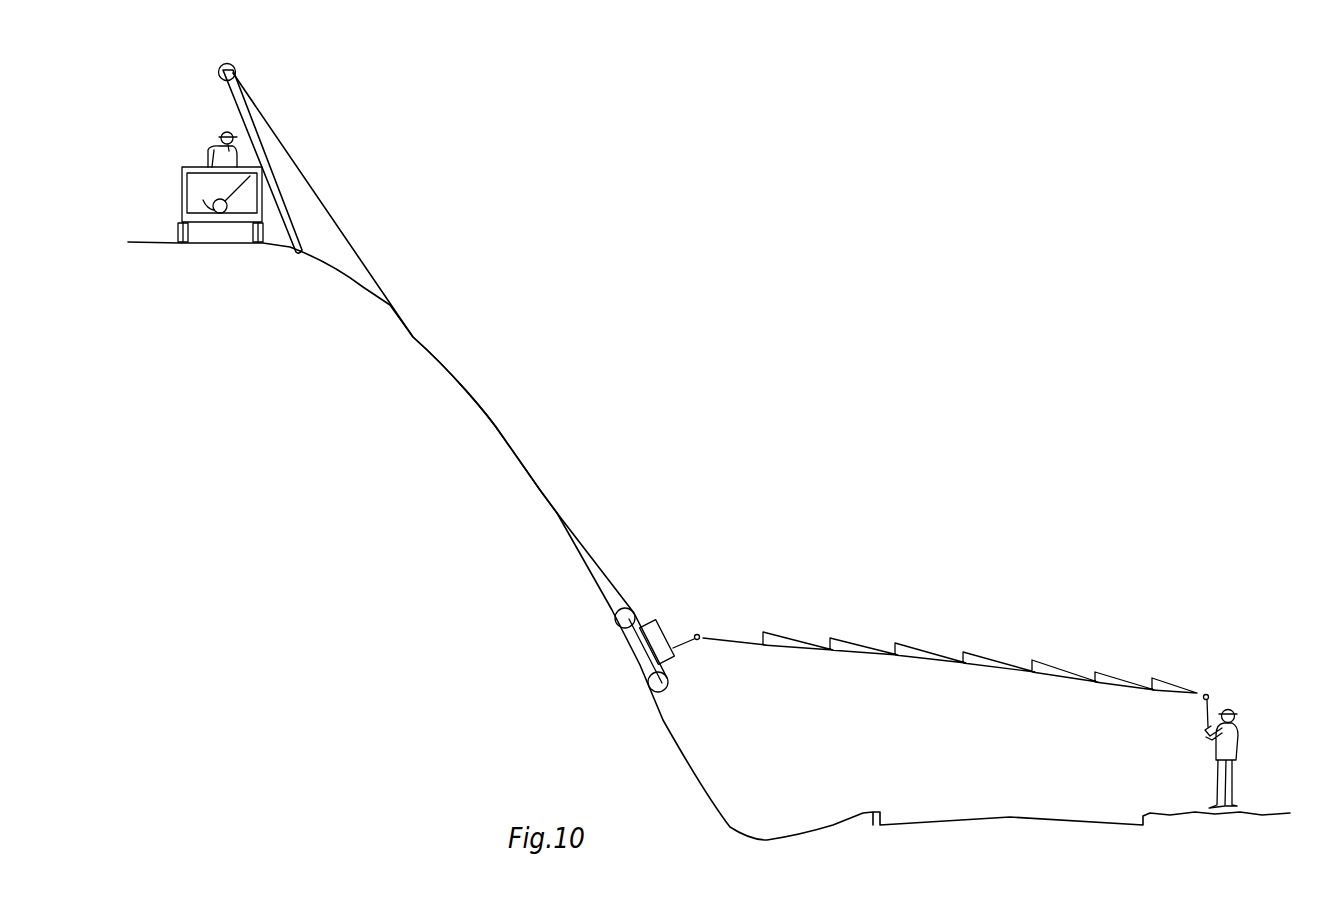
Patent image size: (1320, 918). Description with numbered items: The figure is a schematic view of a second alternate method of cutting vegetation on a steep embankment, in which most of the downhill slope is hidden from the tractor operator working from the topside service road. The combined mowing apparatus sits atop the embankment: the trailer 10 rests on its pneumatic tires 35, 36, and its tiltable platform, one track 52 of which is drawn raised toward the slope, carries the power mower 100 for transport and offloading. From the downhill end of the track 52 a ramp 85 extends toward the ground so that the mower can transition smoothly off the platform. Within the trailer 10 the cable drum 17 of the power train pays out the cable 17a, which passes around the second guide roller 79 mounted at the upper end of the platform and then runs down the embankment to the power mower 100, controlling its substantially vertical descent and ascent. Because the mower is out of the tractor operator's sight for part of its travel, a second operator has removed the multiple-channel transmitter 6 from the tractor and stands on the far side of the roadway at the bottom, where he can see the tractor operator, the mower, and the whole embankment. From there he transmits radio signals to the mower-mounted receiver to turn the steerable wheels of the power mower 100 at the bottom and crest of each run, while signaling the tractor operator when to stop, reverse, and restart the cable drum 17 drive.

The multiple-channel transmitter 6 is at (1203, 730).
The trailer 10 is at (172, 195).
The cable drum 17 is at (222, 194).
The cable 17a is at (350, 250).
The pneumatic tire 35 is at (190, 244).
The pneumatic tire 36 is at (263, 245).
The track 52 is at (257, 141).
The second guide roller 79 is at (234, 66).
The ramp 85 is at (301, 226).
The power mower 100 is at (666, 615).